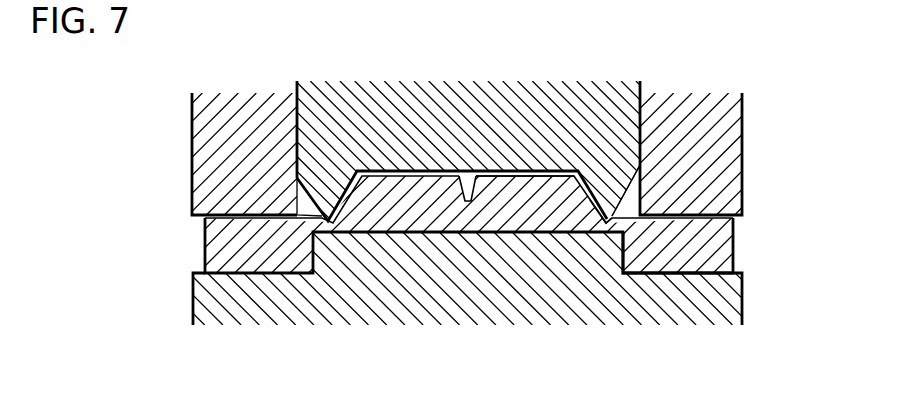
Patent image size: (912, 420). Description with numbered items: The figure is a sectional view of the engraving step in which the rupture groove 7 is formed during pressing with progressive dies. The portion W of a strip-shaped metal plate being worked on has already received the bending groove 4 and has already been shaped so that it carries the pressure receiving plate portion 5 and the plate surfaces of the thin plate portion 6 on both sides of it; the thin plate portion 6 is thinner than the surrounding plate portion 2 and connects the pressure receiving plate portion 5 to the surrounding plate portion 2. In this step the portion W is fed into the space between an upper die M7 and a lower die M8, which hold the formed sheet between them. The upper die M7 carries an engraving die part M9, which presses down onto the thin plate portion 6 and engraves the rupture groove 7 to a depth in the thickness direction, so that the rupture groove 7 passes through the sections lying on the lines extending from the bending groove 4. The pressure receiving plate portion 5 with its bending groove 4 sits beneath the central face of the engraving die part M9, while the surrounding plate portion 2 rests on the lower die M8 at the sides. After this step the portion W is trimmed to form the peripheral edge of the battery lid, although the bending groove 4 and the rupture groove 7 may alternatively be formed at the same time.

The upper die M7 is at (719, 137).
The engraving die part M9 is at (603, 122).
The lower die M8 is at (727, 308).
The portion of a strip-shaped metal plate W is at (720, 243).
The bending groove 4 is at (465, 195).
The pressure receiving plate portion 5 is at (525, 190).
The thin plate portion 6 is at (600, 224).
The rupture groove 7 is at (625, 222).
The surrounding plate portion 2 is at (688, 252).